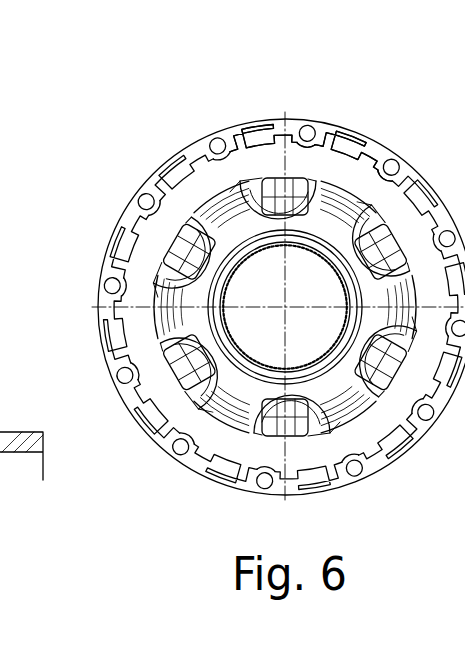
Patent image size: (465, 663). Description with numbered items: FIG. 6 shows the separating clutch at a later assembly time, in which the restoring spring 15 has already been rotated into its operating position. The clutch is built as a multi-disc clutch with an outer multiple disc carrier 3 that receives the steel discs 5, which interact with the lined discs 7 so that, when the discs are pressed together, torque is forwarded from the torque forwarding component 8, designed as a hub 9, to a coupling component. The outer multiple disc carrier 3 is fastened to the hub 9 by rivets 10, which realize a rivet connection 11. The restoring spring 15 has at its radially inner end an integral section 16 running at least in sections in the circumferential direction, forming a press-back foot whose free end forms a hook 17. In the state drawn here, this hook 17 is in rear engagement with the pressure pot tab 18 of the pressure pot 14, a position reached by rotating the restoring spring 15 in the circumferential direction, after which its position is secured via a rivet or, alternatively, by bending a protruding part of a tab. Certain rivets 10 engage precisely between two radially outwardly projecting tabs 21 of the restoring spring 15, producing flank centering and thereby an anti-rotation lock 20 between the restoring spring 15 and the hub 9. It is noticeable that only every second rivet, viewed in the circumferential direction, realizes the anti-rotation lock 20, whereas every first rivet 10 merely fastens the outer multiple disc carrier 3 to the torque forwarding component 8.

The outer multiple disc carrier 3 is at (3, 337).
The steel discs 5 is at (3, 138).
The lined discs 7 is at (9, 299).
The torque forwarding component 8 is at (252, 376).
The hub 9 is at (248, 352).
The rivet 10 is at (138, 197).
The rivet connection 11 is at (104, 282).
The pressure pot 14 is at (301, 259).
The restoring spring 15 is at (304, 150).
The integral section 16 is at (258, 180).
The hook 17 is at (291, 184).
The pressure pot tab 18 is at (316, 186).
The anti-rotation lock 20 is at (218, 138).
The radially outwardly projecting tabs 21 is at (205, 152).